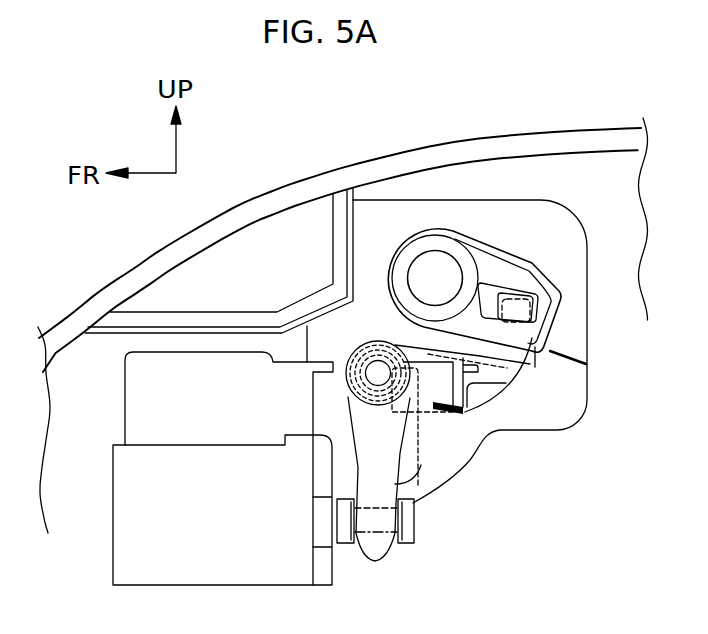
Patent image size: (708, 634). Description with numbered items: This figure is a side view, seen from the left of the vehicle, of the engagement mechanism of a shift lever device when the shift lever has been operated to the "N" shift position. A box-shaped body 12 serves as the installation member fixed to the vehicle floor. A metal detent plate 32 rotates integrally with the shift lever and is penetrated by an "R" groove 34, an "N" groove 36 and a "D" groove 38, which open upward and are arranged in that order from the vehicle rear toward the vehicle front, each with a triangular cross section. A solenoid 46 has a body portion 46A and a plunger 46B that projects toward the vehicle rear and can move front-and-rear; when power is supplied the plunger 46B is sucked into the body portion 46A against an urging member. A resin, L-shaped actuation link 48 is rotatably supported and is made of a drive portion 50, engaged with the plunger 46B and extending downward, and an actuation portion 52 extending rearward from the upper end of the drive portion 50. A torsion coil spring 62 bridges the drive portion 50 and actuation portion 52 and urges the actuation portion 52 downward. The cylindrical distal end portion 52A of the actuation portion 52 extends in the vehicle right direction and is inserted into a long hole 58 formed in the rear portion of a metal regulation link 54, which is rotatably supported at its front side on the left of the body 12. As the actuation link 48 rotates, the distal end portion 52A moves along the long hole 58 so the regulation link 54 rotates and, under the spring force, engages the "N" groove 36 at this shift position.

The body 12 is at (259, 193).
The detent plate 32 is at (530, 413).
The "R" groove 34 is at (590, 365).
The "N" groove 36 is at (553, 349).
The "D" groove 38 is at (505, 368).
The solenoid 46 is at (125, 400).
The body portion 46A is at (113, 556).
The plunger 46B is at (412, 543).
The actuation link 48 is at (356, 347).
The drive portion 50 is at (420, 497).
The actuation portion 52 is at (478, 404).
The distal end portion 52A is at (520, 287).
The regulation link 54 is at (464, 233).
The long hole 58 is at (497, 291).
The torsion coil spring 62 is at (450, 413).